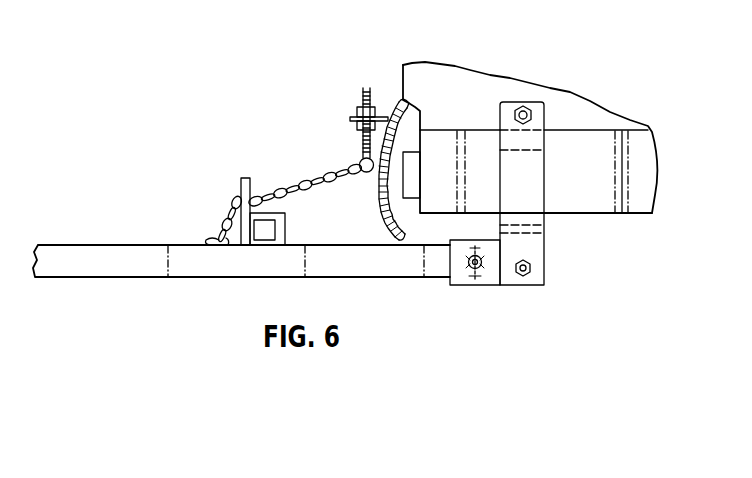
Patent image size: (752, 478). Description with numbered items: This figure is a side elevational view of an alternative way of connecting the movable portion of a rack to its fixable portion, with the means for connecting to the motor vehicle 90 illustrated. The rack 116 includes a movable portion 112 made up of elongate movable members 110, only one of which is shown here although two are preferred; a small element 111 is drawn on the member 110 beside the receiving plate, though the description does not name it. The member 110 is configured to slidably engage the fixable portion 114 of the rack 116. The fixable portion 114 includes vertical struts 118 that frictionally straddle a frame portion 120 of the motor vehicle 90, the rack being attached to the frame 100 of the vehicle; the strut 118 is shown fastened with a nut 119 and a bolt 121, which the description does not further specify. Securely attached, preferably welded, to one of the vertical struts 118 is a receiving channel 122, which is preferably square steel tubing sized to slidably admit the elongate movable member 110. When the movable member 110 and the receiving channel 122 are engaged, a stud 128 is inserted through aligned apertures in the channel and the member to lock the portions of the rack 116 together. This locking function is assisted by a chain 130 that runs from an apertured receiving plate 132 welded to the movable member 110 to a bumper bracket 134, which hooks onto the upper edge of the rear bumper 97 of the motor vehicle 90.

The motor vehicle 90 is at (457, 64).
The rear bumper 97 is at (385, 209).
The frame 100 is at (473, 129).
The elongate movable member 110 is at (118, 268).
The retainer box 111 is at (292, 212).
The movable portion 112 is at (155, 312).
The fixable portion 114 is at (595, 248).
The rack 116 is at (213, 165).
The vertical strut 118 is at (538, 172).
The nut 119 is at (520, 108).
The frame portion 120 is at (640, 195).
The bolt 121 is at (534, 114).
The receiving channel 122 is at (487, 285).
The stud 128 is at (470, 264).
The chain 130 is at (300, 182).
The apertured receiving plate 132 is at (241, 185).
The bumper bracket 134 is at (367, 83).